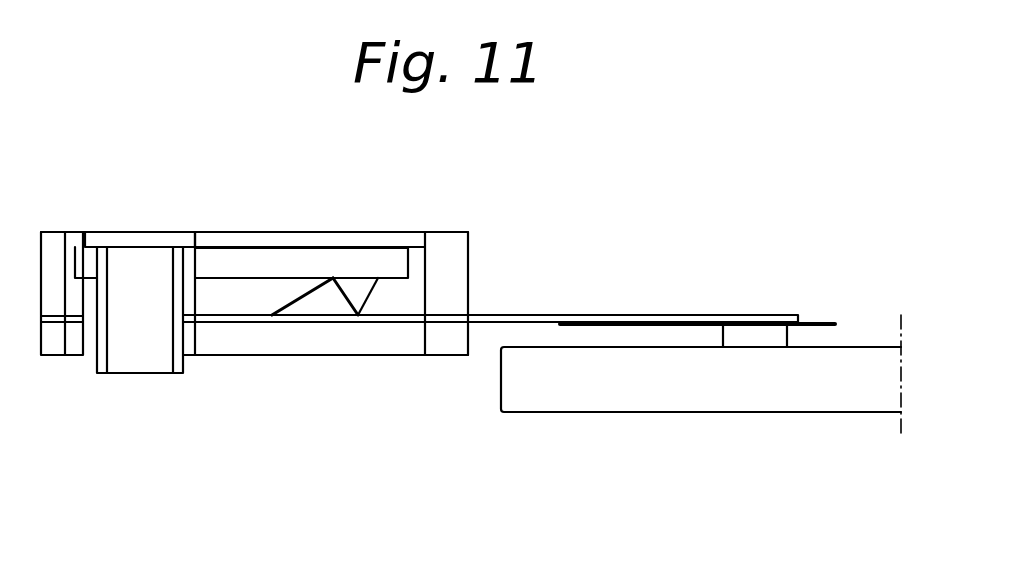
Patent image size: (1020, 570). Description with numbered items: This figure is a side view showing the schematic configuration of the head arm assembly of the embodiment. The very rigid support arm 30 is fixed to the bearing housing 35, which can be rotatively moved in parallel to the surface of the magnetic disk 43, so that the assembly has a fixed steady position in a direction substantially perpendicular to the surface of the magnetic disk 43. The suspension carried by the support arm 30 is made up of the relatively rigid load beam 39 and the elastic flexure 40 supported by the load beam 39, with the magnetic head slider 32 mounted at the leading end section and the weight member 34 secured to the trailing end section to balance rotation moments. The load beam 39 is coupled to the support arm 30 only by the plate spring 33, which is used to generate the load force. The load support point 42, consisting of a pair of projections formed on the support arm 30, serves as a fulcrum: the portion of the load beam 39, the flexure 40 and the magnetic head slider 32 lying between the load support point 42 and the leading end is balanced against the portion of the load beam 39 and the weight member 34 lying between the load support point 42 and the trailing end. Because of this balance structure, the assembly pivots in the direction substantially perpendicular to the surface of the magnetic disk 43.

The support arm 30 is at (318, 245).
The magnetic head slider 32 is at (728, 335).
The plate spring 33 is at (290, 307).
The weight member 34 is at (52, 242).
The bearing housing 35 is at (133, 365).
The load beam 39 is at (527, 315).
The flexure 40 is at (818, 320).
The load support point 42 is at (343, 297).
The magnetic disk 43 is at (650, 398).